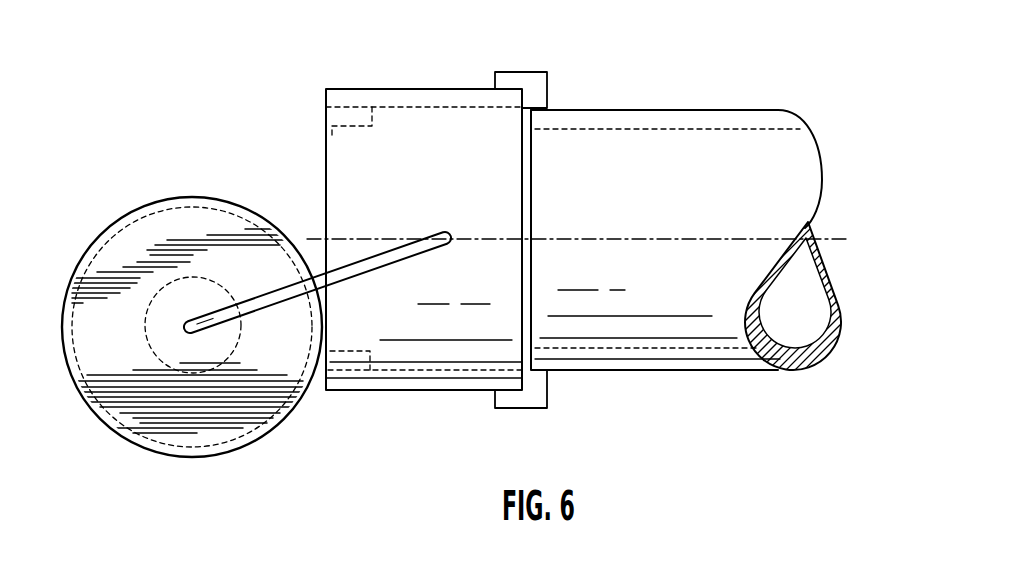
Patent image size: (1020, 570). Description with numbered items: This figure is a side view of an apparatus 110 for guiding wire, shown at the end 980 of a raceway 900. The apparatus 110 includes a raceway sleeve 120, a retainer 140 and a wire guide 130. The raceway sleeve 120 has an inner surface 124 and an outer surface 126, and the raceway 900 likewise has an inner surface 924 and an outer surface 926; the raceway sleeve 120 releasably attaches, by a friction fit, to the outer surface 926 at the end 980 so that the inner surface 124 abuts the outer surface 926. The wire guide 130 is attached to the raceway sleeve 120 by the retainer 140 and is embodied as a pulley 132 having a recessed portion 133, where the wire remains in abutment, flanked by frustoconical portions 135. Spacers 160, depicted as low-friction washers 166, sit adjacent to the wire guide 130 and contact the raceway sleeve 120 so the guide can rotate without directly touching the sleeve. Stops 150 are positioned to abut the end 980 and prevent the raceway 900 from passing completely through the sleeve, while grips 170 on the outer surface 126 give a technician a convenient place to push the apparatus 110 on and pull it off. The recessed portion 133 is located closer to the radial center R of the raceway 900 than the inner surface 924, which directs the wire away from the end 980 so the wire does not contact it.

The apparatus for guiding wire 110 is at (181, 152).
The raceway sleeve 120 is at (357, 95).
The inner surface 124 is at (492, 108).
The outer surface 126 is at (355, 393).
The wire guide 130 is at (202, 430).
The pulley 132 is at (181, 427).
The recessed portion 133 is at (163, 395).
The frustoconical portions 135 is at (280, 427).
The retainer 140 is at (368, 258).
The stops 150 is at (328, 140).
The spacers 160 is at (149, 207).
The washers 166 is at (94, 408).
The grips 170 is at (540, 72).
The raceway 900 is at (735, 120).
The inner surface 924 is at (696, 133).
The outer surface 926 is at (644, 107).
The end 980 is at (530, 289).
The radial center R is at (835, 238).